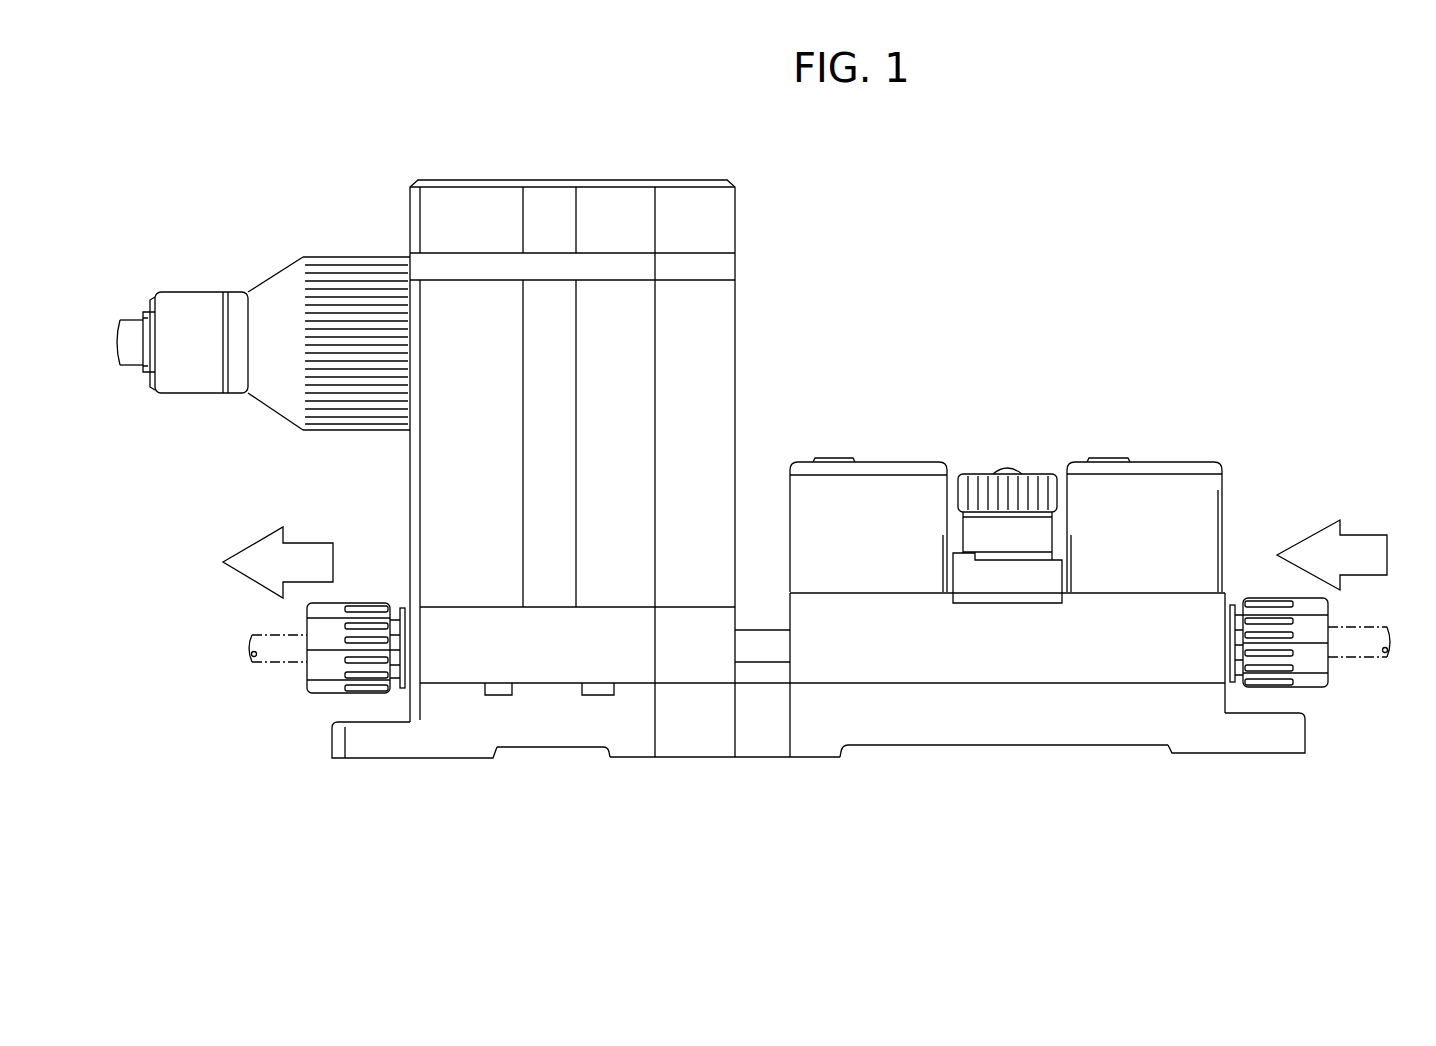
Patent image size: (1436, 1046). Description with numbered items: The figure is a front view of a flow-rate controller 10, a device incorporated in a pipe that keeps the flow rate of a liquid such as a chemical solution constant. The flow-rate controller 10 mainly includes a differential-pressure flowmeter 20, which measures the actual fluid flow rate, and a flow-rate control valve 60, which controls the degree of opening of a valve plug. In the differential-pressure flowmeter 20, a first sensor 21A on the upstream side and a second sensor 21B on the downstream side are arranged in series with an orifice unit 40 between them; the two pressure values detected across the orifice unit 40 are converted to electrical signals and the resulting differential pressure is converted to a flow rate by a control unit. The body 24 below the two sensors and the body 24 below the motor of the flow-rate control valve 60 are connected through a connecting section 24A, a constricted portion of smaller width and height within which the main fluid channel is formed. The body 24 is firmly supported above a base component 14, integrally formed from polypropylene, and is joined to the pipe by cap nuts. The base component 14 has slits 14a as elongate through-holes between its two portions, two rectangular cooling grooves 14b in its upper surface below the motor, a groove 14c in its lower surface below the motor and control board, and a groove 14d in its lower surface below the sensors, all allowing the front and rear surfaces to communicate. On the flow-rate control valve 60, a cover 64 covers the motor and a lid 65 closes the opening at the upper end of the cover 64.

The flow-rate controller 10 is at (1004, 140).
The base component 14 is at (1017, 732).
The slits 14a is at (765, 738).
The cooling grooves 14b is at (497, 686).
The groove 14c is at (545, 750).
The groove 14d is at (1113, 745).
The differential-pressure flowmeter 20 is at (1013, 410).
The first sensor 21A is at (1217, 448).
The second sensor 21B is at (833, 452).
The body 24 is at (907, 663).
The connecting section 24A is at (762, 640).
The orifice unit 40 is at (974, 465).
The flow-rate control valve 60 is at (572, 168).
The cover 64 is at (710, 307).
The lid 65 is at (710, 218).